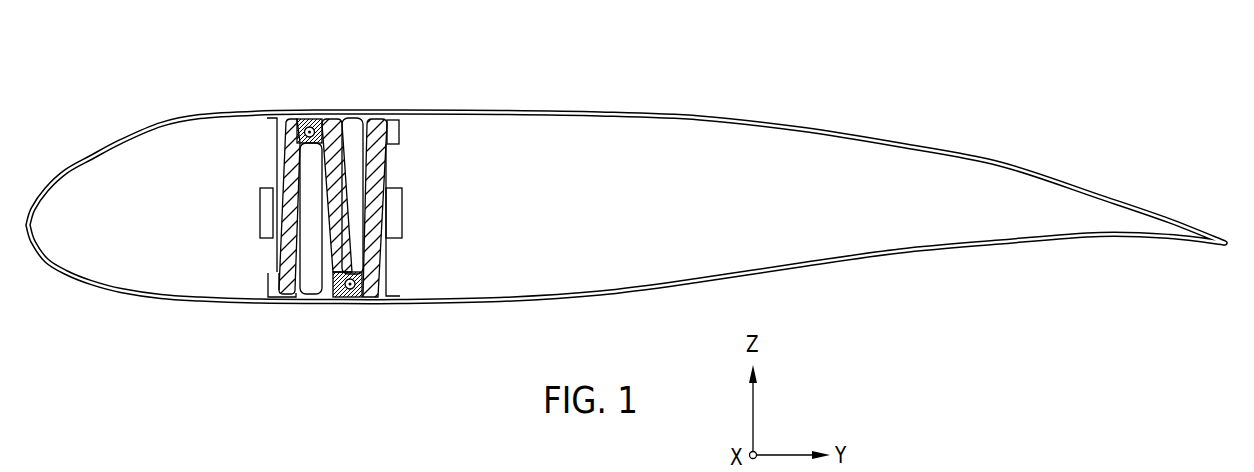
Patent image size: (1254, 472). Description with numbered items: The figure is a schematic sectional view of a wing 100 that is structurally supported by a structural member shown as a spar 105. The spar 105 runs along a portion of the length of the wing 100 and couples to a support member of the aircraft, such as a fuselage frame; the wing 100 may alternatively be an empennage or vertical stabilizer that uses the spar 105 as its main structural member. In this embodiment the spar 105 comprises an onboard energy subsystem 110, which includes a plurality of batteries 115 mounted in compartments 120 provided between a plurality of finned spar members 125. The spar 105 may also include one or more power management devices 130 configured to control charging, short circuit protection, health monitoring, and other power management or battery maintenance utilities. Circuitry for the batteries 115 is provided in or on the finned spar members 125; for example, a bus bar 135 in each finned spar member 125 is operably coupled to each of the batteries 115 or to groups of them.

The wing 100 is at (923, 83).
The spar 105 is at (398, 44).
The onboard energy subsystem 110 is at (250, 162).
The batteries 115 is at (373, 112).
The compartments 120 is at (284, 306).
The finned spar members 125 is at (393, 124).
The power management devices 130 is at (260, 212).
The bus bar 135 is at (295, 131).